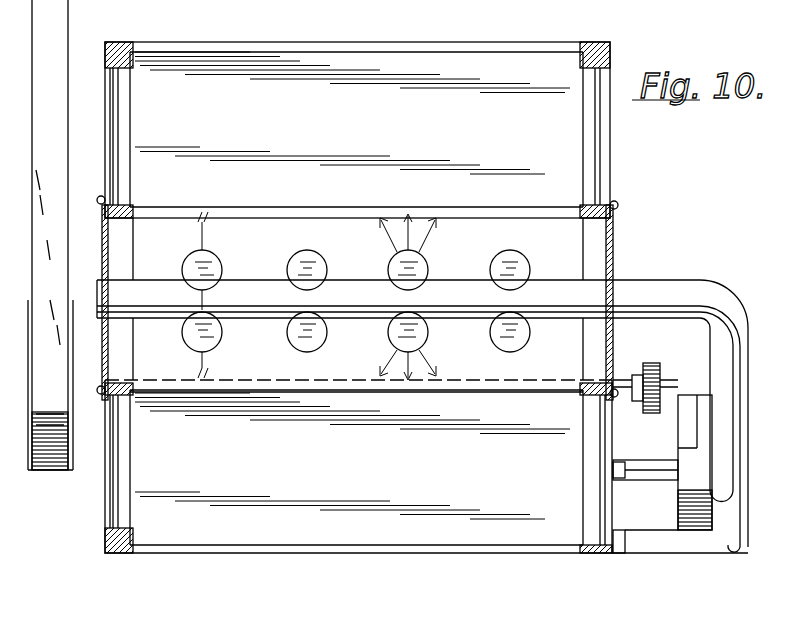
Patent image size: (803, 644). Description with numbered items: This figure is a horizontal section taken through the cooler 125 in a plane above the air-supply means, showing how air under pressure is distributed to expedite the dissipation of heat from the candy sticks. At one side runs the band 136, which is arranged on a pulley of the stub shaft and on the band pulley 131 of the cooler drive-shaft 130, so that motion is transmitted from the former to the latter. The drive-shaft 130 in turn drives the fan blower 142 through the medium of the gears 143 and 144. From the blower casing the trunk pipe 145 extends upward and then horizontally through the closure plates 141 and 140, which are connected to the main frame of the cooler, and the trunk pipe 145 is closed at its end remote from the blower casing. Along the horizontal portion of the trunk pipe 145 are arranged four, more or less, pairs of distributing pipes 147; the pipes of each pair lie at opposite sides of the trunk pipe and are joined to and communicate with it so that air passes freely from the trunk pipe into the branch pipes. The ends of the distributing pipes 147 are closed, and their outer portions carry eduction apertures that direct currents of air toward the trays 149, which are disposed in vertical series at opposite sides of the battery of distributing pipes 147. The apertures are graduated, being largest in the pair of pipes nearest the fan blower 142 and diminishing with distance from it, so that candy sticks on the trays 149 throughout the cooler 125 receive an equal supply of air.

The cooler 125 is at (618, 154).
The drive-shaft 130 is at (125, 397).
The band pulley 131 is at (28, 470).
The band 136 is at (62, 15).
The closure plate 140 is at (108, 243).
The closure plate 141 is at (614, 240).
The fan blower 142 is at (718, 510).
The gear 143 is at (656, 365).
The gear 144 is at (618, 440).
The trunk pipe 145 is at (750, 465).
The distributing pipes 147 is at (292, 262).
The trays 149 is at (352, 285).